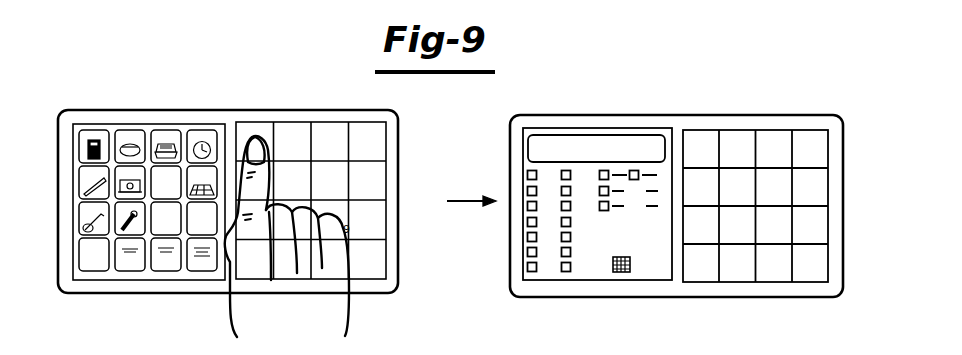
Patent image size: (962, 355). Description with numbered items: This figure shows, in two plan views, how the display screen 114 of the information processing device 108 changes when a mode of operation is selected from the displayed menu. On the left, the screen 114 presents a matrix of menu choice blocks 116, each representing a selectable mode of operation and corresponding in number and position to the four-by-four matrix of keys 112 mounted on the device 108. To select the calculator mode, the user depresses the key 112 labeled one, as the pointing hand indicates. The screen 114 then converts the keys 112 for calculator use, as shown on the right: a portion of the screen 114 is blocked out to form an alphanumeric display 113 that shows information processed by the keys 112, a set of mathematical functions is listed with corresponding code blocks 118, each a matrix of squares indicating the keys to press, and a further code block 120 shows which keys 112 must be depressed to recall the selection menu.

The information processing device 108 is at (86, 90).
The matrix of keys 112 is at (325, 122).
The alphanumeric display 113 is at (662, 136).
The display screen 114 is at (207, 124).
The menu choice blocks 116 is at (107, 130).
The code blocks 118 is at (527, 222).
The code block 120 is at (613, 260).